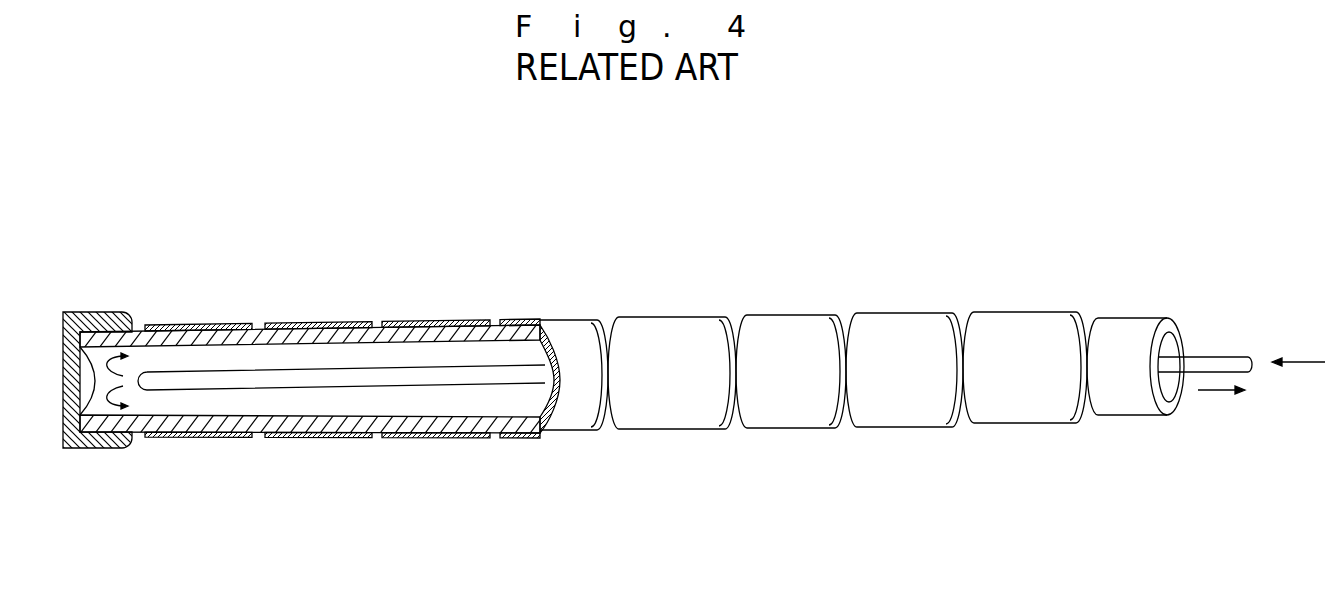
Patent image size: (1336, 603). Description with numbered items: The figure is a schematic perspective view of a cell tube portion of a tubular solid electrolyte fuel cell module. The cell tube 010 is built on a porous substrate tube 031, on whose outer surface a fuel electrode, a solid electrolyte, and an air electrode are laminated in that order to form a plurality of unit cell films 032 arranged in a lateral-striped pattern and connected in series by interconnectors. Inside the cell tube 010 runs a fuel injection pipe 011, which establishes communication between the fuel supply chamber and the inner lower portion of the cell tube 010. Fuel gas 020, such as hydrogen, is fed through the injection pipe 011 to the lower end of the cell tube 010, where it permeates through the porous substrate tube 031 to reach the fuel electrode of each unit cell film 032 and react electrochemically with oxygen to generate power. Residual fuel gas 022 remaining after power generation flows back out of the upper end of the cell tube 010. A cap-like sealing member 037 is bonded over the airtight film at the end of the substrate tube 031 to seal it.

The cell tube 010 is at (1121, 433).
The fuel injection pipe 011 is at (348, 378).
The fuel gas 020 is at (107, 408).
The residual fuel gas 022 is at (1215, 390).
The substrate tube 031 is at (1130, 317).
The unit cell film 032 is at (1008, 310).
The cap-like sealing member 037 is at (62, 328).